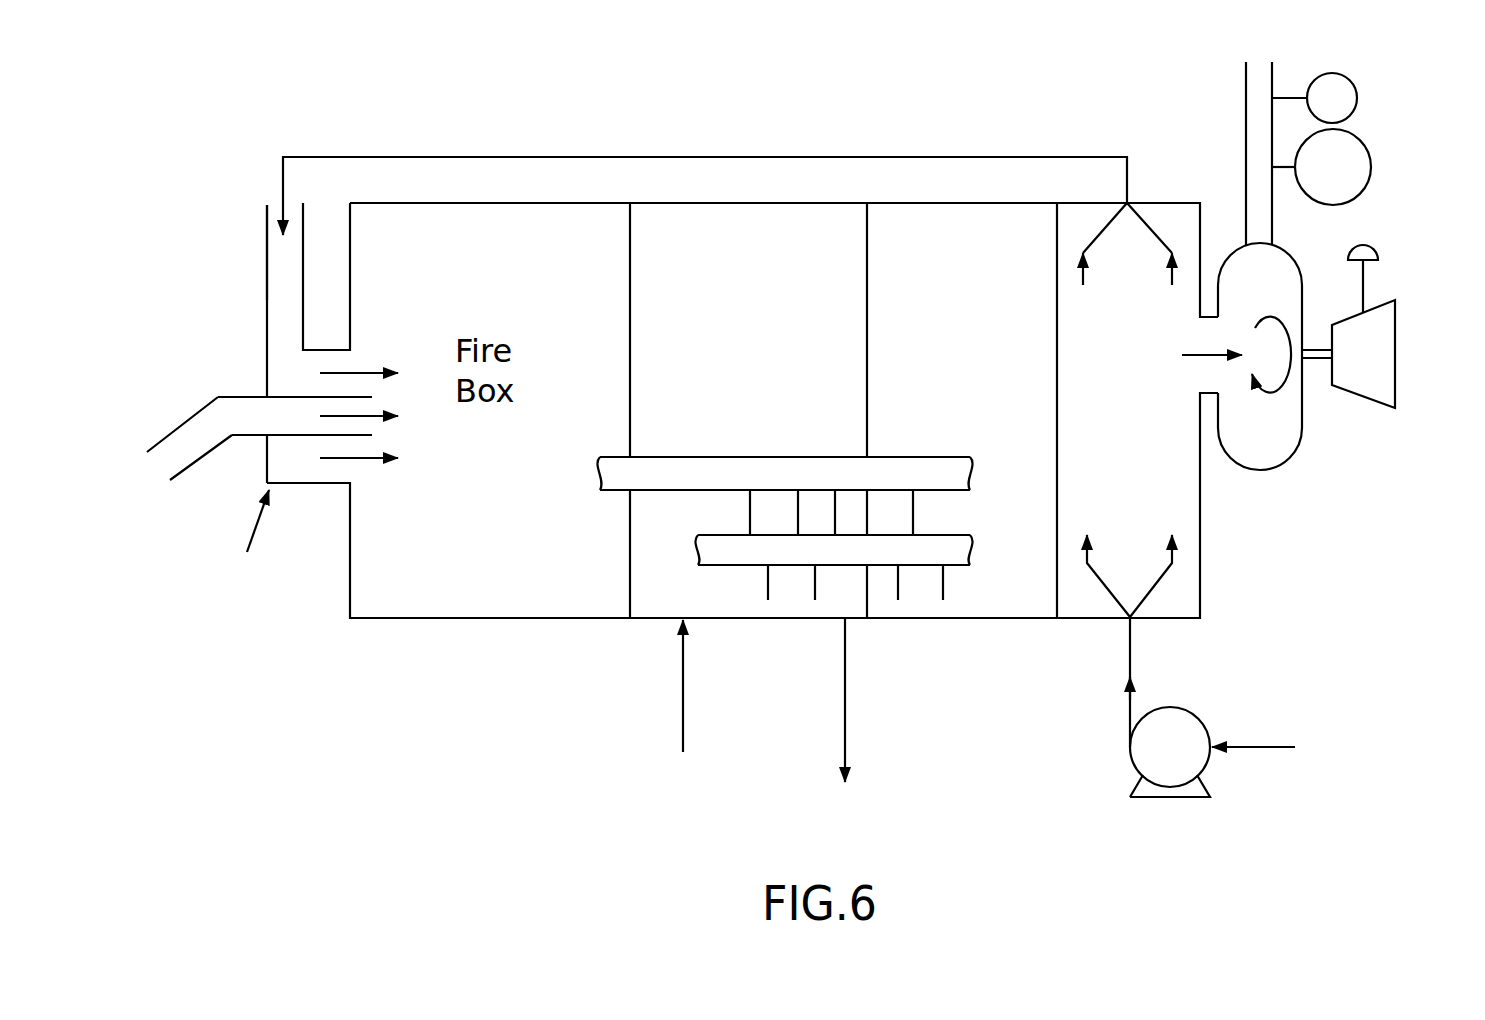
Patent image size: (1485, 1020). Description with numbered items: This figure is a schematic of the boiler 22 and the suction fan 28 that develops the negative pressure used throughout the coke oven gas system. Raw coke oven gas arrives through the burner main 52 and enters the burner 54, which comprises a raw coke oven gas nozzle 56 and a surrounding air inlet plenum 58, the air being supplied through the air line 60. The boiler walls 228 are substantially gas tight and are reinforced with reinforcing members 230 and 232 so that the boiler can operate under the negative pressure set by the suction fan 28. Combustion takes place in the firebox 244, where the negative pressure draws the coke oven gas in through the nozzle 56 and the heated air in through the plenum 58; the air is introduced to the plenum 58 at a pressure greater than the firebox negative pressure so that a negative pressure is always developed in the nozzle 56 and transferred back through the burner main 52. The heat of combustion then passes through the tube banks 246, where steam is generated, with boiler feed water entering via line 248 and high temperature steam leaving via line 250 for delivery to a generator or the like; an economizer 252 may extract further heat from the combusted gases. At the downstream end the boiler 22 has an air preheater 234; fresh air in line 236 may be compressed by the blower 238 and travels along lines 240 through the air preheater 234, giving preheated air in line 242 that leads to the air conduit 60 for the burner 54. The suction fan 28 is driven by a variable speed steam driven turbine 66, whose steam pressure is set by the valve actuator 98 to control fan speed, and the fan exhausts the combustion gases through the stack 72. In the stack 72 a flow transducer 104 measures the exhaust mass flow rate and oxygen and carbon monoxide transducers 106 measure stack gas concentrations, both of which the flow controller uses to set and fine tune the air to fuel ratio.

The boiler 22 is at (456, 692).
The suction fan 28 is at (1302, 435).
The burner main 52 is at (232, 397).
The burner 54 is at (245, 539).
The raw coke oven gas nozzle 56 is at (356, 435).
The air inlet plenum 58 is at (337, 363).
The air line 60 is at (266, 235).
The steam driven turbine 66 is at (1383, 333).
The stack 72 is at (1246, 90).
The valve actuator 98 is at (1378, 250).
The flow transducer 104 is at (1357, 92).
The oxygen and carbon monoxide transducers 106 is at (1371, 158).
The boiler walls 228 is at (612, 607).
The reinforcing member 230 is at (803, 555).
The reinforcing member 232 is at (868, 602).
The air preheater 234 is at (1192, 580).
The air line 236 is at (1258, 748).
The blower 238 is at (1182, 720).
The air lines 240 is at (1130, 660).
The preheated air line 242 is at (698, 157).
The firebox 244 is at (376, 604).
The tube banks 246 is at (802, 225).
The boiler feed water line 248 is at (683, 742).
The steam line 250 is at (845, 732).
The economizer 252 is at (997, 230).